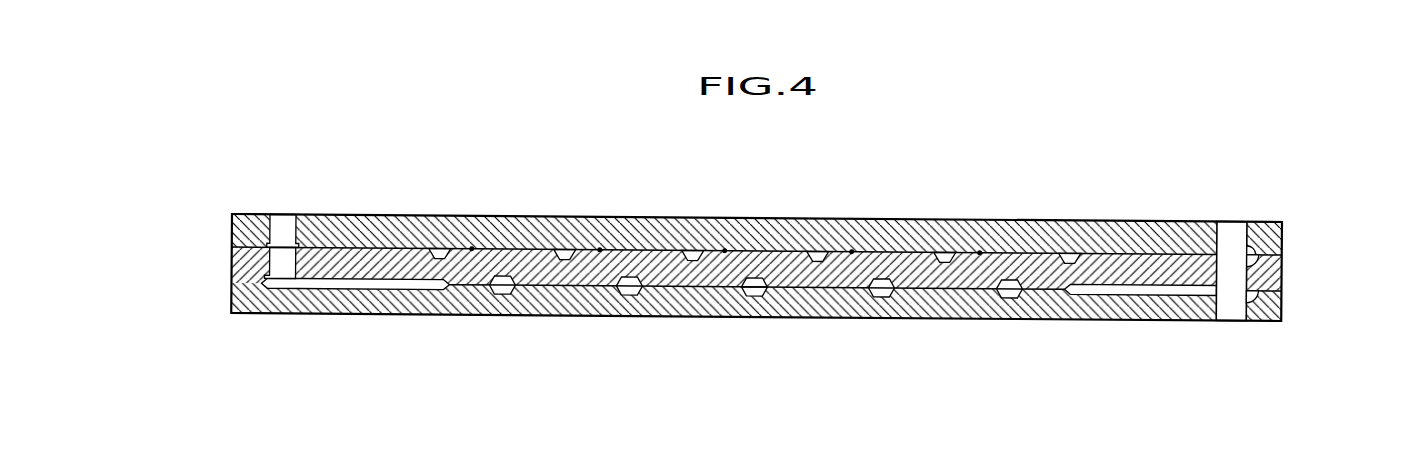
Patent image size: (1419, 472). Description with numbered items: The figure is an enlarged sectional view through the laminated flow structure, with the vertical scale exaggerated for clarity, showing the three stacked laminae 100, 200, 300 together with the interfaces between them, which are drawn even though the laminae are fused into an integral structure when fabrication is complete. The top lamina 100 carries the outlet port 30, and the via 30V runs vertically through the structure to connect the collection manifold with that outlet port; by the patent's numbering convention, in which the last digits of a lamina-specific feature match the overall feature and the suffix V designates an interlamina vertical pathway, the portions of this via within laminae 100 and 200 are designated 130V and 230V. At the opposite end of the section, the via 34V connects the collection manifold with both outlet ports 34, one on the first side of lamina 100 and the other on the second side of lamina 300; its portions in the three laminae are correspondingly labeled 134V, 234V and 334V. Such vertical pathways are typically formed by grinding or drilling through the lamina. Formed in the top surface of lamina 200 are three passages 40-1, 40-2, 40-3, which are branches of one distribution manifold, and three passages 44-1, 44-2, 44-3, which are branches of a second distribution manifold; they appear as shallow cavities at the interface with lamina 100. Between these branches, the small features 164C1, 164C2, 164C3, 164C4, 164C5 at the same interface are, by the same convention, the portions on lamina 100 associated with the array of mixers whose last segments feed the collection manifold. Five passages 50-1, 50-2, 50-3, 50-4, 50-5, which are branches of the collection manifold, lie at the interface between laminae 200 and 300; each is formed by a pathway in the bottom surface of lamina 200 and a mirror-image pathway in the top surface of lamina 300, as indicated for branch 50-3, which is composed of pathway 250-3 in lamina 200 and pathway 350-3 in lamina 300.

The lamina 100 is at (1283, 242).
The lamina 200 is at (1283, 277).
The lamina 300 is at (1283, 311).
The outlet port 30 is at (190, 212).
The vertical passage 30V is at (190, 243).
The inlet via in first layer 130V is at (285, 233).
The inlet via in second layer 230V is at (285, 266).
The outlet port 34 is at (1232, 209).
The vertical passage 34V is at (1331, 212).
The outlet via in first layer 134V is at (1253, 240).
The outlet via in second layer 234V is at (1258, 272).
The outlet via in third layer 334V is at (1250, 312).
The passage 44-1 is at (440, 249).
The passage 44-2 is at (693, 251).
The passage 44-3 is at (948, 252).
The passage 40-1 is at (566, 250).
The passage 40-2 is at (820, 252).
The passage 40-3 is at (1075, 253).
The first connecting channel 164C1 is at (472, 249).
The second connecting channel 164C2 is at (600, 250).
The third connecting channel 164C3 is at (725, 251).
The fourth connecting channel 164C4 is at (852, 252).
The fifth connecting channel 164C5 is at (980, 253).
The passage 50-1 is at (503, 286).
The passage 50-2 is at (630, 287).
The passage 50-3 is at (855, 355).
The passage 50-4 is at (882, 289).
The passage 50-5 is at (1010, 290).
The pathway 250-3 is at (767, 287).
The pathway 350-3 is at (772, 292).